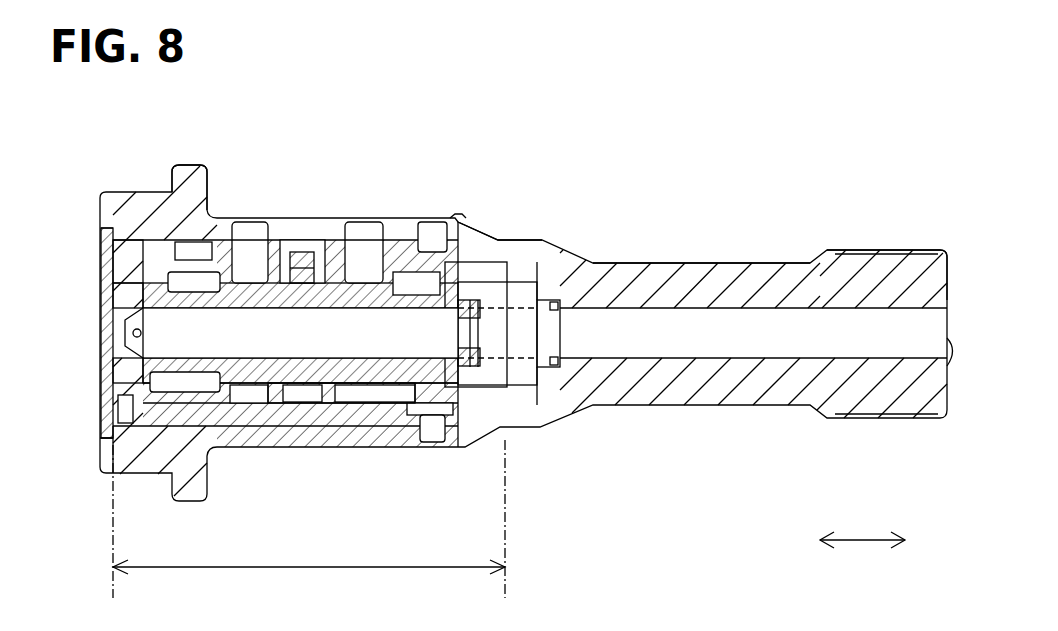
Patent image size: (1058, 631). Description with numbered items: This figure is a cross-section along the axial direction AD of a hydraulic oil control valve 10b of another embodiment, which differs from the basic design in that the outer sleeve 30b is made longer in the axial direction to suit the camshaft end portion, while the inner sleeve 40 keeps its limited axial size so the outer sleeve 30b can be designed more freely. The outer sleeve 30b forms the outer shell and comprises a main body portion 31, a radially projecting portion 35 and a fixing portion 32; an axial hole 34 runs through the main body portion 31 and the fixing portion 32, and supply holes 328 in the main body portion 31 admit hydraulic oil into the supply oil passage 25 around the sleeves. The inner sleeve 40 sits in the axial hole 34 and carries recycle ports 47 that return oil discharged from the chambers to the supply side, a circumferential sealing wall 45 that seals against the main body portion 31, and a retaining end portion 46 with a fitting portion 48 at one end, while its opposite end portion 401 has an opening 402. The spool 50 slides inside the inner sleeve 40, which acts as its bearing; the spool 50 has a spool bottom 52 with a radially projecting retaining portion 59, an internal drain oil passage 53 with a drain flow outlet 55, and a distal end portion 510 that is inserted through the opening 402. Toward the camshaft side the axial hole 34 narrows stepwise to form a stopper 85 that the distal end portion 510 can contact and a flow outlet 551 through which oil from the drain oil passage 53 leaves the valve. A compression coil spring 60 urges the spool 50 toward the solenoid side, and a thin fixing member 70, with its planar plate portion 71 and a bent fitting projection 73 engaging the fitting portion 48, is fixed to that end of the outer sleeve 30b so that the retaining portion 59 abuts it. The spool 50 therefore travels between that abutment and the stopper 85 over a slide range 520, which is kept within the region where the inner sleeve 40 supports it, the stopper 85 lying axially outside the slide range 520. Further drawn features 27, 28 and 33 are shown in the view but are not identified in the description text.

The hydraulic oil control valve 10b is at (845, 117).
The outer sleeve 30b is at (795, 208).
The supply oil passage 25 is at (455, 222).
The check valve 27 is at (367, 214).
The check valve 28 is at (252, 214).
The main body portion 31 is at (287, 232).
The fixing portion 32 is at (882, 280).
The rod end face 33 is at (917, 250).
The axial hole 34 is at (737, 312).
The projecting portion 35 is at (178, 255).
The inner sleeve 40 is at (358, 415).
The sealing wall 45 is at (165, 447).
The retaining end portion 46 is at (122, 235).
The recycle ports 47 is at (296, 268).
The fitting portion 48 is at (125, 408).
The spool 50 is at (302, 392).
The spool bottom 52 is at (135, 337).
The drain oil passage 53 is at (722, 346).
The drain flow outlet 55 is at (143, 335).
The retaining portion 59 is at (103, 287).
The spring 60 is at (543, 363).
The fixing member 70 is at (97, 236).
The planar plate portion 71 is at (102, 258).
The fitting projection 73 is at (118, 440).
The stopper 85 is at (533, 275).
The supply holes 328 is at (428, 232).
The end portion 401 is at (505, 400).
The opening 402 is at (473, 368).
The distal end portion 510 is at (478, 245).
The slide range 520 is at (309, 521).
The flow outlet 551 is at (948, 383).